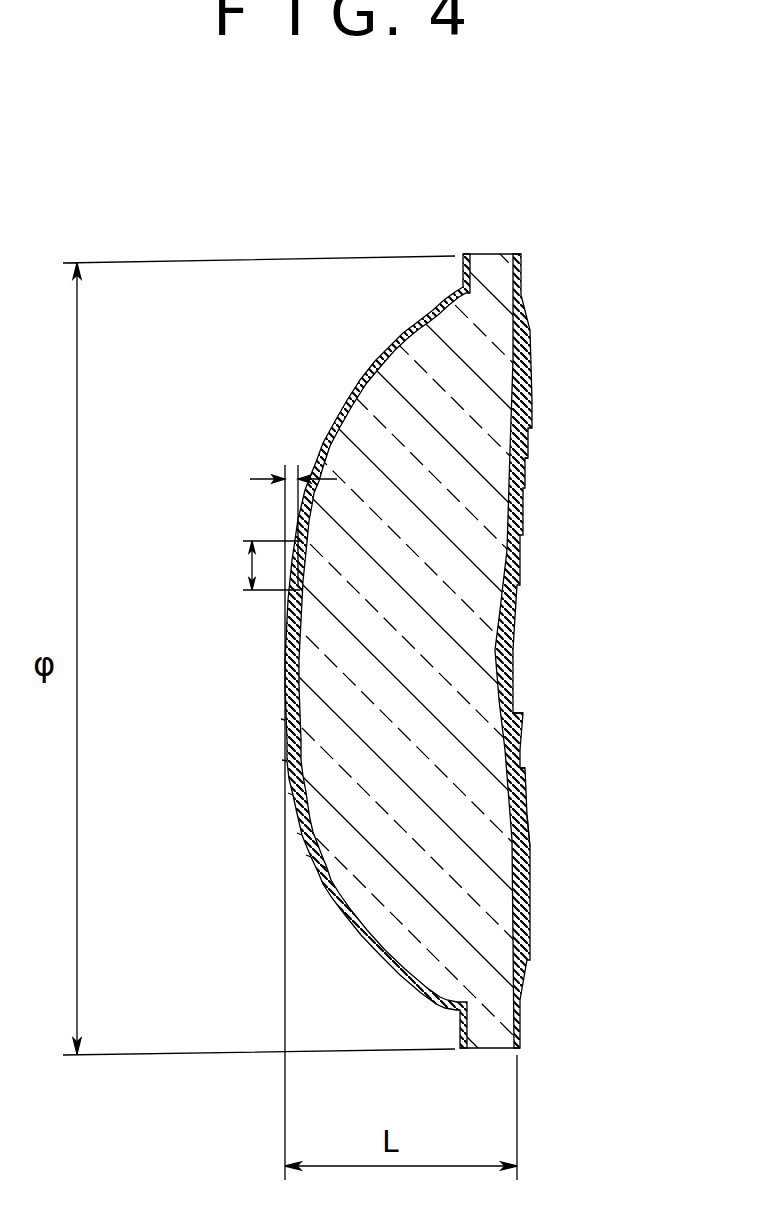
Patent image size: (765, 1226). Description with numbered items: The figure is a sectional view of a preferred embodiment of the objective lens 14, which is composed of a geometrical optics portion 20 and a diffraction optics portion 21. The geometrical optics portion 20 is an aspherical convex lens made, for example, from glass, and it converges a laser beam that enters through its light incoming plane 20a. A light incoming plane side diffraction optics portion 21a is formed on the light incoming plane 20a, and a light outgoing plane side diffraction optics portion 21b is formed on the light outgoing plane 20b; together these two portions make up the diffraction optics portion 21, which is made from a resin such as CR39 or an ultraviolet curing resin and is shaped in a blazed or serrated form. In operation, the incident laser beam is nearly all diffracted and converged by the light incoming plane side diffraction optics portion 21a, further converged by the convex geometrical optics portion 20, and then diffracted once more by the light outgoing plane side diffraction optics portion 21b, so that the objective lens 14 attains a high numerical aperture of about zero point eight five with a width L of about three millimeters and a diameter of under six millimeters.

The objective lens 14 is at (510, 222).
The geometrical optics portion 20 is at (478, 368).
The light incoming plane 20a is at (347, 400).
The light outgoing plane 20b is at (526, 452).
The diffraction optics portion 21 is at (330, 868).
The light incoming plane side diffraction optics portion 21a is at (336, 871).
The light outgoing plane side diffraction optics portion 21b is at (518, 738).